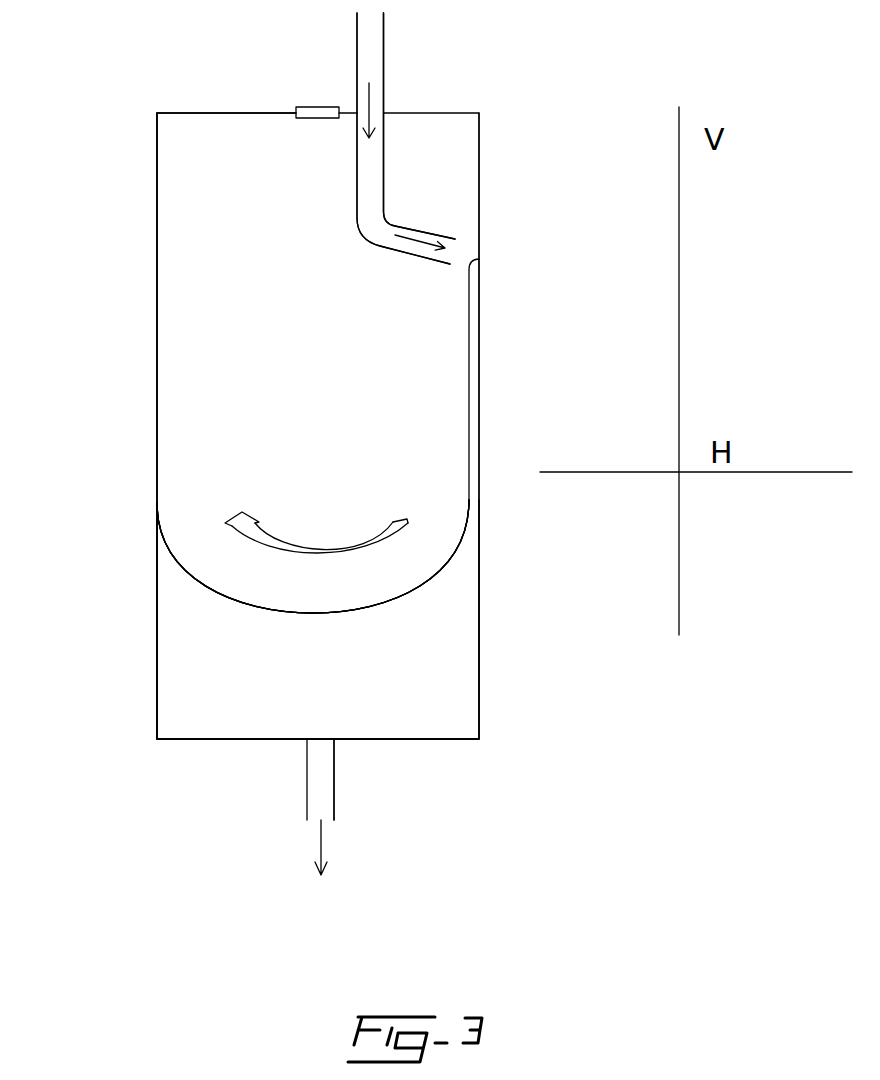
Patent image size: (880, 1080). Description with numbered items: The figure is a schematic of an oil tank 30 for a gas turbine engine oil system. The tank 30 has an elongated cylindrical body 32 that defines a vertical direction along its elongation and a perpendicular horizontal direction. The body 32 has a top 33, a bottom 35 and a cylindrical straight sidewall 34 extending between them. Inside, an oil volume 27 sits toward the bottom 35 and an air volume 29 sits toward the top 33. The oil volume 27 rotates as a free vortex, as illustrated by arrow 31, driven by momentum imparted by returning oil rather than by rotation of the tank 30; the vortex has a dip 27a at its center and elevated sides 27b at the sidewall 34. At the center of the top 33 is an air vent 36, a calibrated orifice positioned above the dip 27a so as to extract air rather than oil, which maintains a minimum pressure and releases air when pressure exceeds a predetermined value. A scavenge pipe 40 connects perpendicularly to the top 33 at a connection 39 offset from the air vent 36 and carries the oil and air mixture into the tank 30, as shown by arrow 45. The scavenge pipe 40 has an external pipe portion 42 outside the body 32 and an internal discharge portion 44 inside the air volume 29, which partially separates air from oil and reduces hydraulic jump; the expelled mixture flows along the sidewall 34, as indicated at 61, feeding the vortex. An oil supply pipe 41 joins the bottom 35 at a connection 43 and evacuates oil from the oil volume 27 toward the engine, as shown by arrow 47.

The oil volume 27 is at (270, 687).
The dip 27a is at (313, 556).
The elevated sides 27b is at (354, 543).
The air volume 29 is at (310, 420).
The tank 30 is at (110, 227).
The arrow 31 is at (340, 553).
The body 32 is at (157, 397).
The top 33 is at (217, 113).
The sidewall 34 is at (157, 318).
The bottom 35 is at (408, 740).
The air vent 36 is at (310, 107).
The connection 39 is at (385, 97).
The scavenge pipe 40 is at (385, 53).
The oil supply pipe 41 is at (334, 777).
The external pipe portion 42 is at (350, 23).
The connection 43 is at (334, 741).
The internal discharge portion 44 is at (350, 125).
The arrow 45 is at (410, 240).
The arrow 47 is at (320, 847).
The flow along the sidewall 61 is at (499, 379).